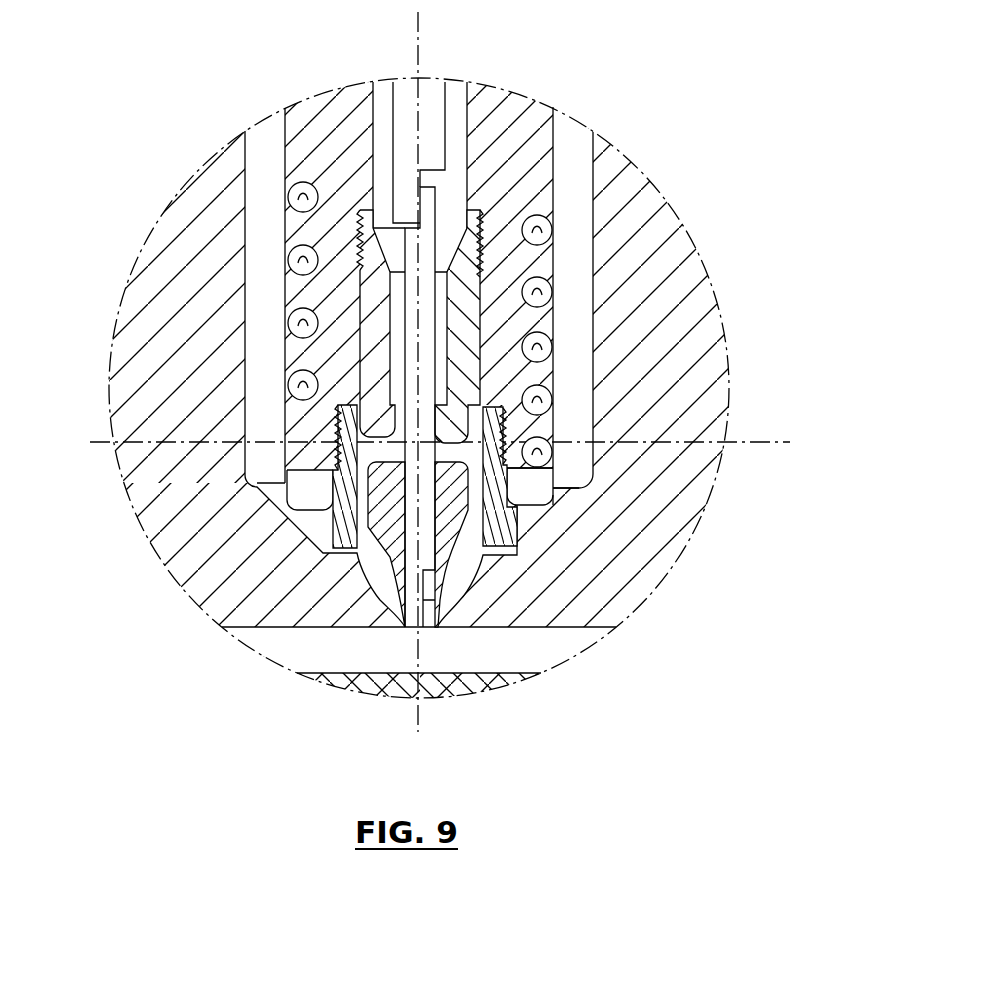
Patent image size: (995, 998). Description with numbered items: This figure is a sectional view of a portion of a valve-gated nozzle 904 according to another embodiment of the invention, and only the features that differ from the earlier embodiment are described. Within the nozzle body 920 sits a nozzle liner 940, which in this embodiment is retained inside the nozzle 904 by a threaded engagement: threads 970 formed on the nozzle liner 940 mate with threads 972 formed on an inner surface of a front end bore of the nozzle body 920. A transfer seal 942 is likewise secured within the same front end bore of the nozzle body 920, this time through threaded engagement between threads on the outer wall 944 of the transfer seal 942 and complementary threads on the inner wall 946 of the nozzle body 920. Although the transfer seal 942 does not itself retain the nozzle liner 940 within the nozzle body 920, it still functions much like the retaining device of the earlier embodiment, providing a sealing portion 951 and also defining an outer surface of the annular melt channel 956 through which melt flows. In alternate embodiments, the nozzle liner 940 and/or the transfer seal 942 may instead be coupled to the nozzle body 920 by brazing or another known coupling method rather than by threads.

The valve-gated nozzle 904 is at (540, 138).
The nozzle body 920 is at (512, 110).
The nozzle liner 940 is at (463, 320).
The transfer seal 942 is at (517, 545).
The outer wall 944 is at (345, 445).
The inner wall 946 is at (330, 460).
The sealing portion 951 is at (365, 597).
The annular melt channel 956 is at (485, 490).
The threads 970 is at (360, 230).
The threads 972 is at (360, 250).